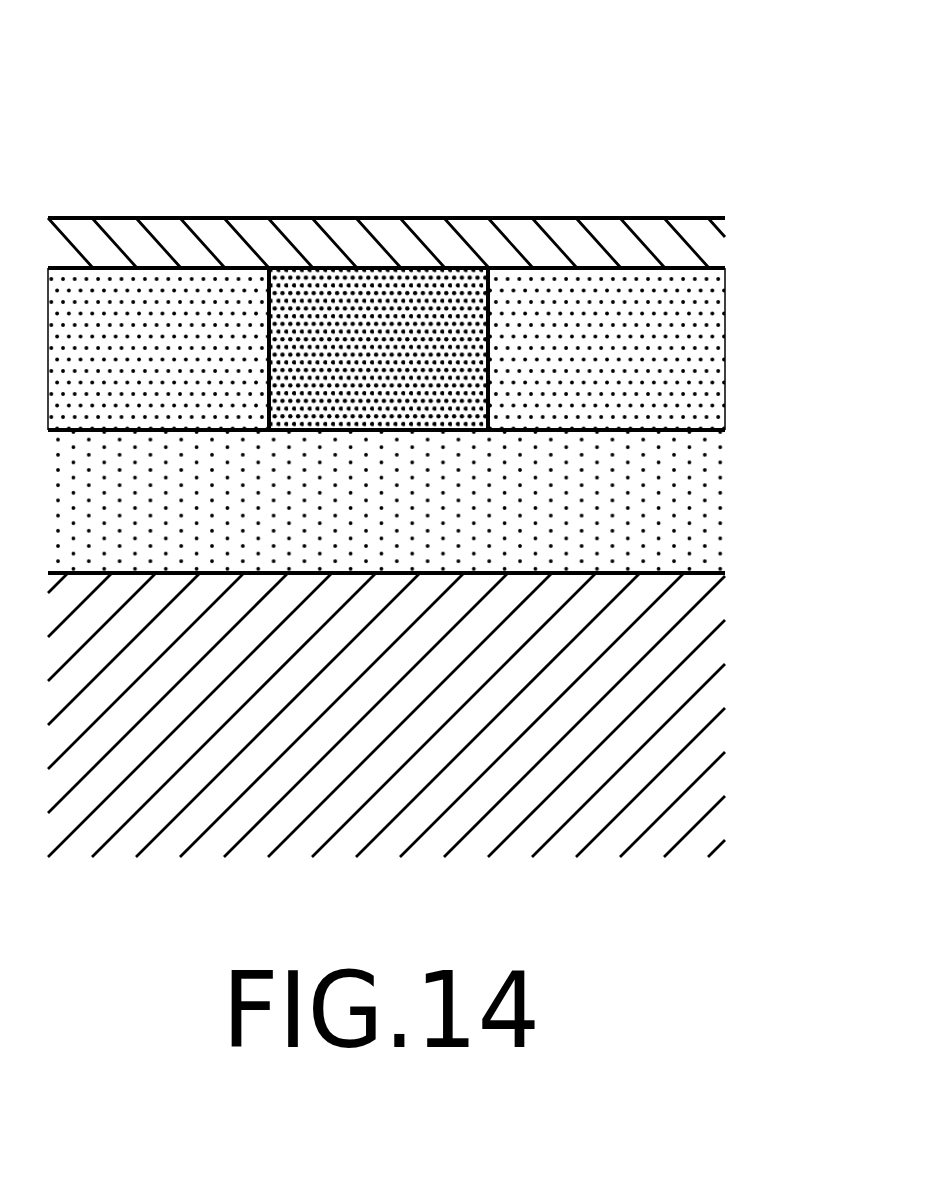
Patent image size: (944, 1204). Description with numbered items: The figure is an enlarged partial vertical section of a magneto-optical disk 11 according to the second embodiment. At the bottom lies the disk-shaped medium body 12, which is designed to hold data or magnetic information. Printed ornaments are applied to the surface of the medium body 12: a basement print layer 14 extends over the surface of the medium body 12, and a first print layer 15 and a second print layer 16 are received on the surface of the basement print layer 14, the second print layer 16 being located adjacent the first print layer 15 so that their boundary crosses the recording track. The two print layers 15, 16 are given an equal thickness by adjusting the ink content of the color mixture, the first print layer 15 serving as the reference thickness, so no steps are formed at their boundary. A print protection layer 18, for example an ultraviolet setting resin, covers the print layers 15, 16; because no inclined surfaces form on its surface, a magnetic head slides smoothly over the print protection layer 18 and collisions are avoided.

The magneto-optical disk 11 is at (178, 174).
The medium body 12 is at (712, 571).
The basement print layer 14 is at (712, 430).
The first print layer 15 is at (712, 268).
The second print layer 16 is at (433, 275).
The print protection layer 18 is at (724, 237).